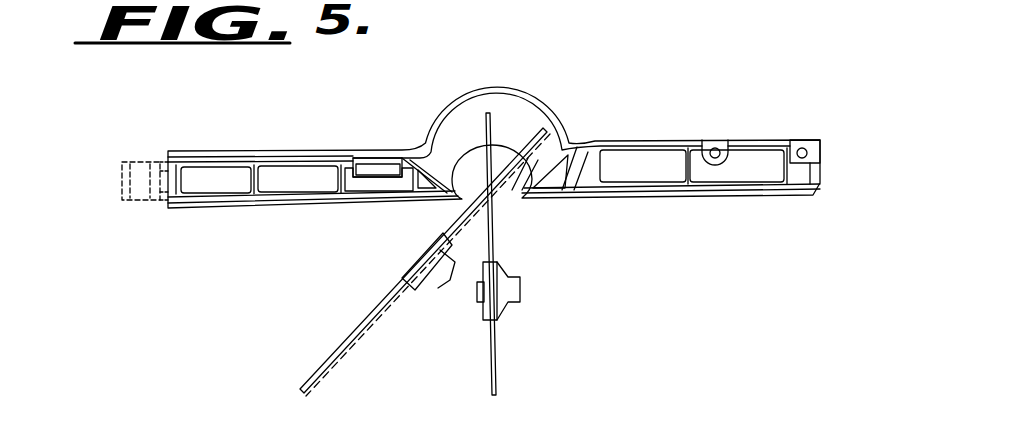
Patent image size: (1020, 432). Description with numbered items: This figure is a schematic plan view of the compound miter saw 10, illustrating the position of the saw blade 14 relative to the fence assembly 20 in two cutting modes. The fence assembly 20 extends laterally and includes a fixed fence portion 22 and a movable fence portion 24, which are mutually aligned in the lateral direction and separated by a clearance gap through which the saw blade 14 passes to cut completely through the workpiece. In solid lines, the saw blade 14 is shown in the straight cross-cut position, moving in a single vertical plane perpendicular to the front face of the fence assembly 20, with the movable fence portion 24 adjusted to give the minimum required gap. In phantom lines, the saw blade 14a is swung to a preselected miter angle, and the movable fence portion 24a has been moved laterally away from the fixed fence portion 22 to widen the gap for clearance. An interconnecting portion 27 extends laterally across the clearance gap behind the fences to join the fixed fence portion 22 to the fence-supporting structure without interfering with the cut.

The compound miter saw 10 is at (459, 78).
The saw blade 14 is at (497, 353).
The saw blade in miter-cutting position 14a is at (318, 370).
The fence assembly 20 is at (640, 130).
The fixed fence portion 22 is at (714, 194).
The movable fence portion 24 is at (262, 205).
The movable fence portion in adjusted position 24a is at (140, 210).
The interconnecting portion 27 is at (523, 115).